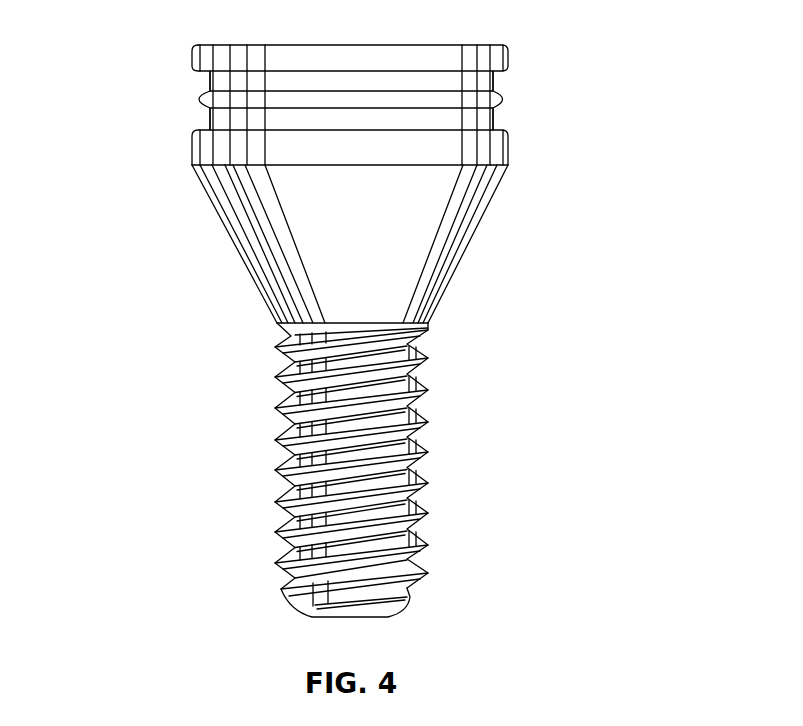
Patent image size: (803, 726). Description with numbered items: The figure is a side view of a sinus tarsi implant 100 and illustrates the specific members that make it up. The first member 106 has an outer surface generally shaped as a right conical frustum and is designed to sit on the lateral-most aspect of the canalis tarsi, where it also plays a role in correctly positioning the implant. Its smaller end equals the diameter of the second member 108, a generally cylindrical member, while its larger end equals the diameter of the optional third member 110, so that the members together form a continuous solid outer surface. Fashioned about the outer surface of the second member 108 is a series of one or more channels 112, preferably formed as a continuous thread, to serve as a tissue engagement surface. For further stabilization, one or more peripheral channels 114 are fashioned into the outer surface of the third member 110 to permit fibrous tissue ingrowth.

The dental implant 100 is at (457, 315).
The first member 106 is at (180, 168).
The second member 108 is at (297, 618).
The third member 110 is at (180, 45).
The channels 112 is at (428, 492).
The peripheral channels 114 is at (495, 82).